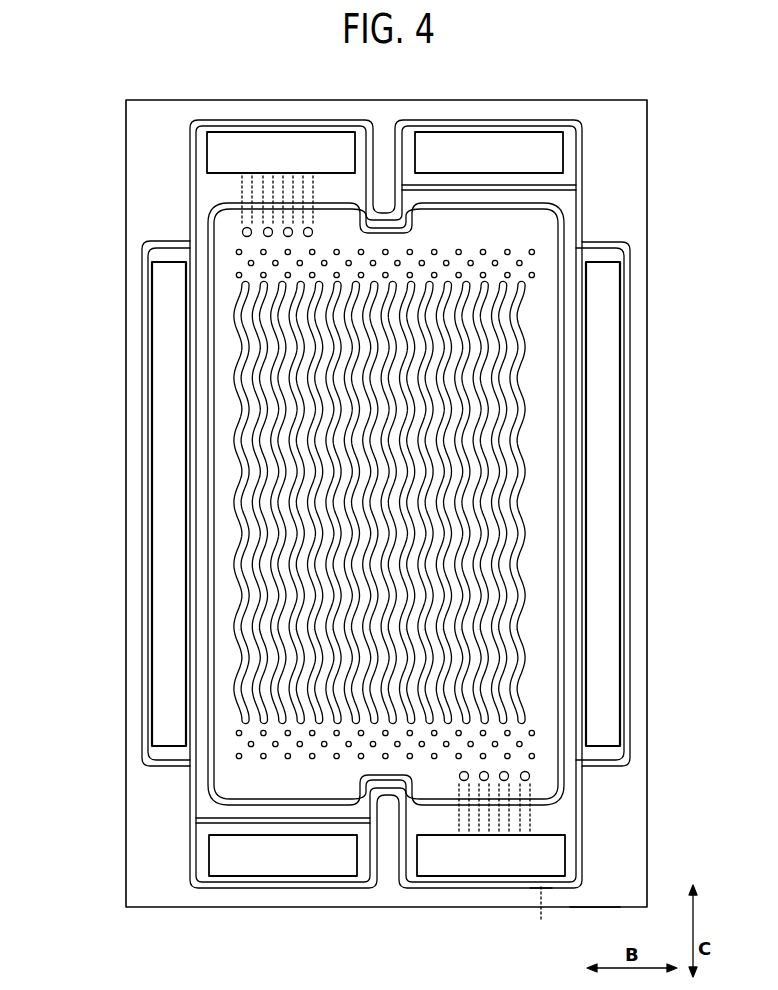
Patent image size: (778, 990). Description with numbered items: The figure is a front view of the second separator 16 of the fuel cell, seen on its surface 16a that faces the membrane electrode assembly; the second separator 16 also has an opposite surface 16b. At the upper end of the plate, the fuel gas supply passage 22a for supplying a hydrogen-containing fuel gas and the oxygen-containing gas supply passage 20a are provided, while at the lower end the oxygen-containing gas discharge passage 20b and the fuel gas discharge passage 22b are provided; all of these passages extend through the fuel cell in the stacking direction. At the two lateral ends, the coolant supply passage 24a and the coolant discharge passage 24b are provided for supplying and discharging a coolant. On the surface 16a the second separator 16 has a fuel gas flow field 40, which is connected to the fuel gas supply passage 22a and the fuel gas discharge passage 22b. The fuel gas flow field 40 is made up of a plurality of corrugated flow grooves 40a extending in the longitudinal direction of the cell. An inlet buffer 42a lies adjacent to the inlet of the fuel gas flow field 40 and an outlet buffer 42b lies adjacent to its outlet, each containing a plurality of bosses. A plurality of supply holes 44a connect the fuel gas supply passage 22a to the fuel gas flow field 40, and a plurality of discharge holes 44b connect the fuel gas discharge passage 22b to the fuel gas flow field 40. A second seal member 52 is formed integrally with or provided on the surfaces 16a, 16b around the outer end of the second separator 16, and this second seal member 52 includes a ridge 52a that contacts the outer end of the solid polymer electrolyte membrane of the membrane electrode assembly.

The second separator 16 is at (562, 58).
The surface of the second separator 16a is at (596, 893).
The surface of the second separator 16b is at (542, 918).
The oxygen-containing gas supply passage 20a is at (489, 152).
The oxygen-containing gas discharge passage 20b is at (283, 855).
The fuel gas supply passage 22a is at (281, 178).
The fuel gas discharge passage 22b is at (491, 830).
The coolant supply passage 24a is at (600, 637).
The coolant discharge passage 24b is at (173, 637).
The fuel gas flow field 40 is at (430, 505).
The corrugated flow grooves 40a is at (517, 397).
The inlet buffer 42a is at (509, 250).
The outlet buffer 42b is at (262, 759).
The supply holes 44a is at (243, 231).
The discharge holes 44b is at (530, 777).
The second seal member 52 is at (648, 158).
The ridge 52a is at (563, 596).